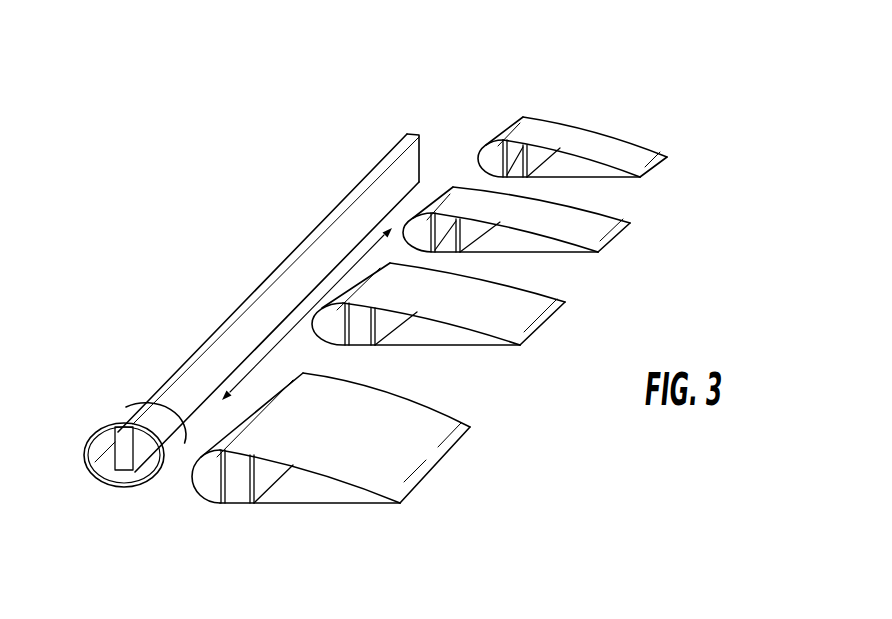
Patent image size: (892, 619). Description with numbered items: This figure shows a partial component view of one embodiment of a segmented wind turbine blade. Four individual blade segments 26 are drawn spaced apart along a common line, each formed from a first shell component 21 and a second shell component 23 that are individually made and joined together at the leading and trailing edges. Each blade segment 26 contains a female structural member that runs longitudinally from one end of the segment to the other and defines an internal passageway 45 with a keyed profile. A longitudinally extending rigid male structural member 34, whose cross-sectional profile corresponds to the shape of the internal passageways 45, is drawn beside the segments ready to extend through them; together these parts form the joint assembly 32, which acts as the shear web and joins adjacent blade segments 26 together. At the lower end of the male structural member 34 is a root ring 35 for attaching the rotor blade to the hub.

The first shell component 21 is at (452, 422).
The second shell component 23 is at (318, 507).
The blade segment 26 is at (449, 344).
The joint assembly 32 is at (585, 52).
The male structural member 34 is at (210, 295).
The root ring 35 is at (93, 475).
The internal passageway 45 is at (240, 460).